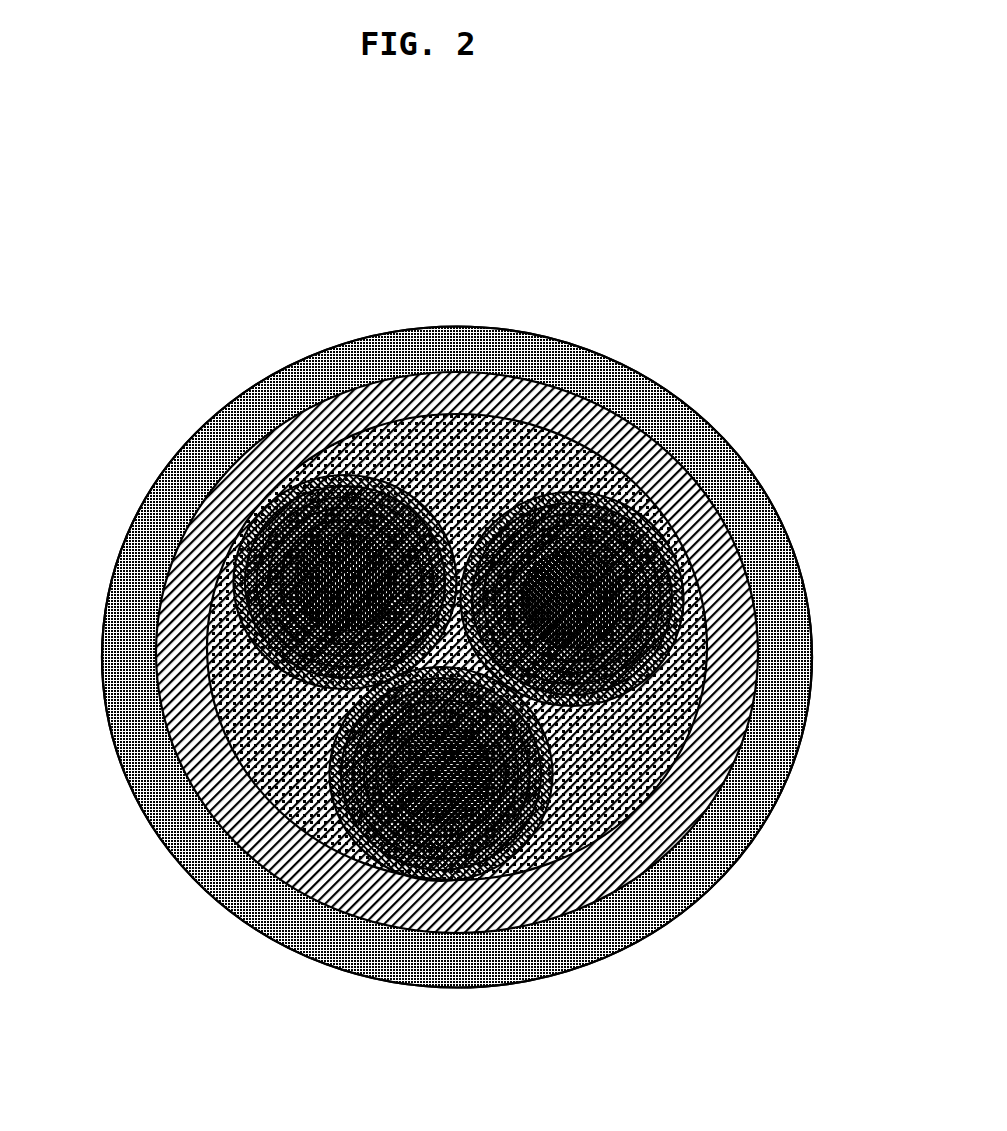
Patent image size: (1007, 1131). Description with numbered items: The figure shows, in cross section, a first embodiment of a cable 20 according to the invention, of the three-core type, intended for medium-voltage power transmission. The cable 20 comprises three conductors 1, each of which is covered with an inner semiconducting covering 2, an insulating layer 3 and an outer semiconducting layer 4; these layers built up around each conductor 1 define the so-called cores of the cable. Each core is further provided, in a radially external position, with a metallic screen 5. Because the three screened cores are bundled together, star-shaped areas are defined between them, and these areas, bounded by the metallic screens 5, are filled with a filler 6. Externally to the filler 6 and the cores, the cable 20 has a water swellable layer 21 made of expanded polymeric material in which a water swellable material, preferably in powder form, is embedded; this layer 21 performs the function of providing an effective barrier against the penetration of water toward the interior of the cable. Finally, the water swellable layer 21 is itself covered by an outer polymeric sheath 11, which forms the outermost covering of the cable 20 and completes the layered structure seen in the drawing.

The conductor 1 is at (659, 491).
The inner semiconducting covering 2 is at (662, 525).
The insulating layer 3 is at (735, 455).
The outer semiconducting layer 4 is at (738, 550).
The metallic screen 5 is at (700, 617).
The filler 6 is at (170, 803).
The outer polymeric sheath 11 is at (437, 656).
The cable 20 is at (192, 276).
The water swellable layer 21 is at (383, 647).